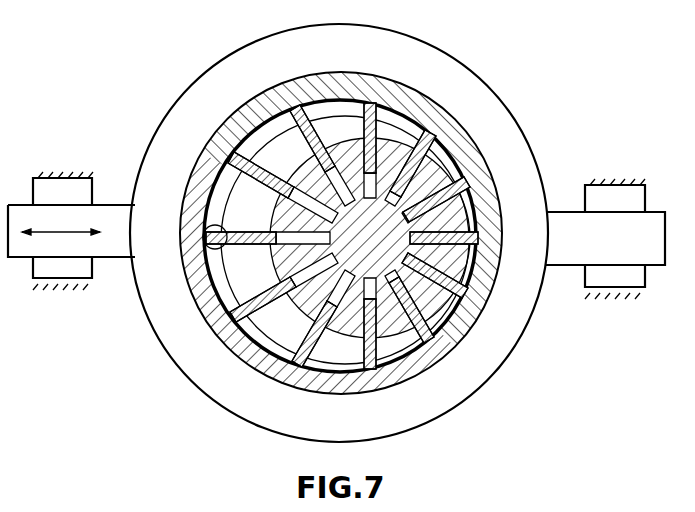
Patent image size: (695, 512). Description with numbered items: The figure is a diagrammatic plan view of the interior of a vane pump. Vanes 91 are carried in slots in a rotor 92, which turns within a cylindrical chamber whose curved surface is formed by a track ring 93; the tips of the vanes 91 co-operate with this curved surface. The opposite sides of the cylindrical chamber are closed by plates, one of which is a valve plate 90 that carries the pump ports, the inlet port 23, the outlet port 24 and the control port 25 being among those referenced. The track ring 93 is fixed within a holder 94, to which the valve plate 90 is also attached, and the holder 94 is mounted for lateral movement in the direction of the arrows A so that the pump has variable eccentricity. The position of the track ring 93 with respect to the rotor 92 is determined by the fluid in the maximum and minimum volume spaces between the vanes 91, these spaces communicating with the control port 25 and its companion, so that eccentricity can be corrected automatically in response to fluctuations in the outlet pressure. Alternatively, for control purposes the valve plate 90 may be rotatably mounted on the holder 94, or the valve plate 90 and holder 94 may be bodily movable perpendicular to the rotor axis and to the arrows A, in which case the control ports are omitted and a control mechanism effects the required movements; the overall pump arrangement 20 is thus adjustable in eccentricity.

The pump assembly with shaft and bearings 20 is at (483, 305).
The inlet port 23 is at (278, 342).
The outlet port 24 is at (393, 117).
The control port 25 is at (193, 198).
The valve plate 90 is at (222, 278).
The vanes 91 is at (245, 230).
The rotor 92 is at (405, 335).
The track ring 93 is at (230, 345).
The holder 94 is at (485, 93).